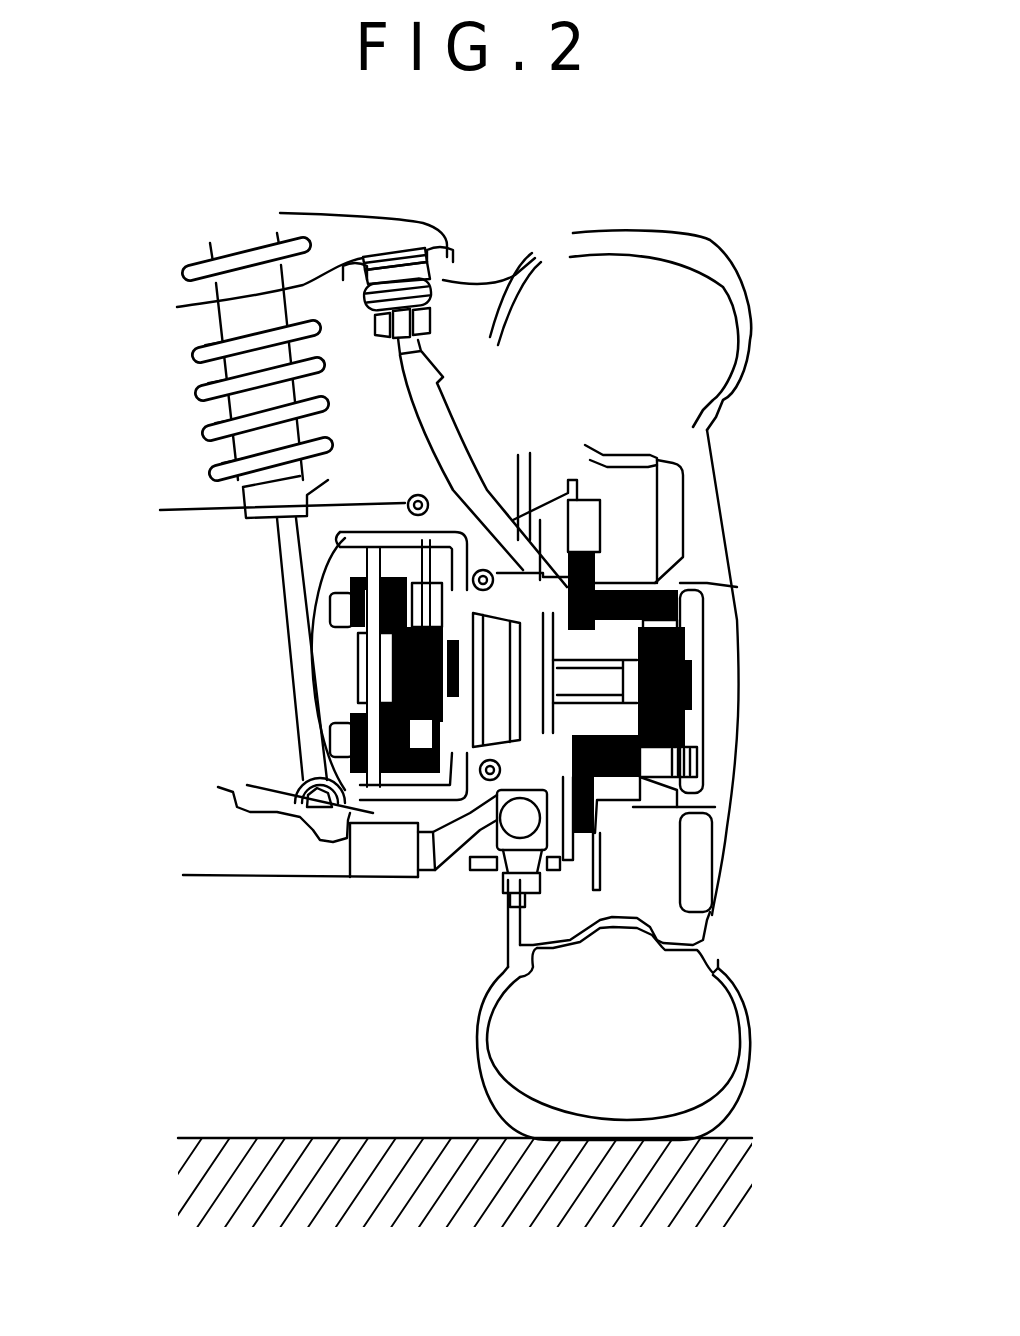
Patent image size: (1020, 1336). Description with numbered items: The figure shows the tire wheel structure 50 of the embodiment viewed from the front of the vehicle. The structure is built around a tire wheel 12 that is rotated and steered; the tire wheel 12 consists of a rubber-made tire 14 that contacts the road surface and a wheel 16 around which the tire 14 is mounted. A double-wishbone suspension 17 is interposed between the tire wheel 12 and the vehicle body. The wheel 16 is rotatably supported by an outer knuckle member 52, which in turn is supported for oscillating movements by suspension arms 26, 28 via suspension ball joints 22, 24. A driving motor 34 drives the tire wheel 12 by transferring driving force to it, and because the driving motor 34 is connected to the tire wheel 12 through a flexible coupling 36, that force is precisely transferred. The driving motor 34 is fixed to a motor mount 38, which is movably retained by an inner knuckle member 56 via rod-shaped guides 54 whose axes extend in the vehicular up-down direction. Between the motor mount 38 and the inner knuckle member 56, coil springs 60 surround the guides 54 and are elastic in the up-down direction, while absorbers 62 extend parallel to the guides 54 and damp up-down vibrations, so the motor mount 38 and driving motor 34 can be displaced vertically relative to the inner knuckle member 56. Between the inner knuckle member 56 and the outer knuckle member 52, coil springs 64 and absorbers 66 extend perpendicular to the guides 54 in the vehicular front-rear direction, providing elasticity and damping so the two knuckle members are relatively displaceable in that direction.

The tire wheel 12 is at (818, 783).
The tire 14 is at (736, 985).
The wheel 16 is at (720, 807).
The double-wishbone suspension 17 is at (162, 389).
The suspension ball joint 22 is at (526, 262).
The suspension ball joint 24 is at (488, 832).
The suspension arm 26 is at (438, 225).
The suspension arm 28 is at (437, 873).
The driving motor 34 is at (415, 770).
The flexible coupling 36 is at (617, 790).
The motor mount 38 is at (356, 656).
The tire wheel structure 50 is at (512, 356).
The outer knuckle member 52 is at (468, 492).
The guide 54 is at (313, 580).
The inner knuckle member 56 is at (337, 533).
The coil spring 60 is at (347, 553).
The absorber 62 is at (160, 510).
The coil spring 64 is at (525, 535).
The absorber 66 is at (462, 472).